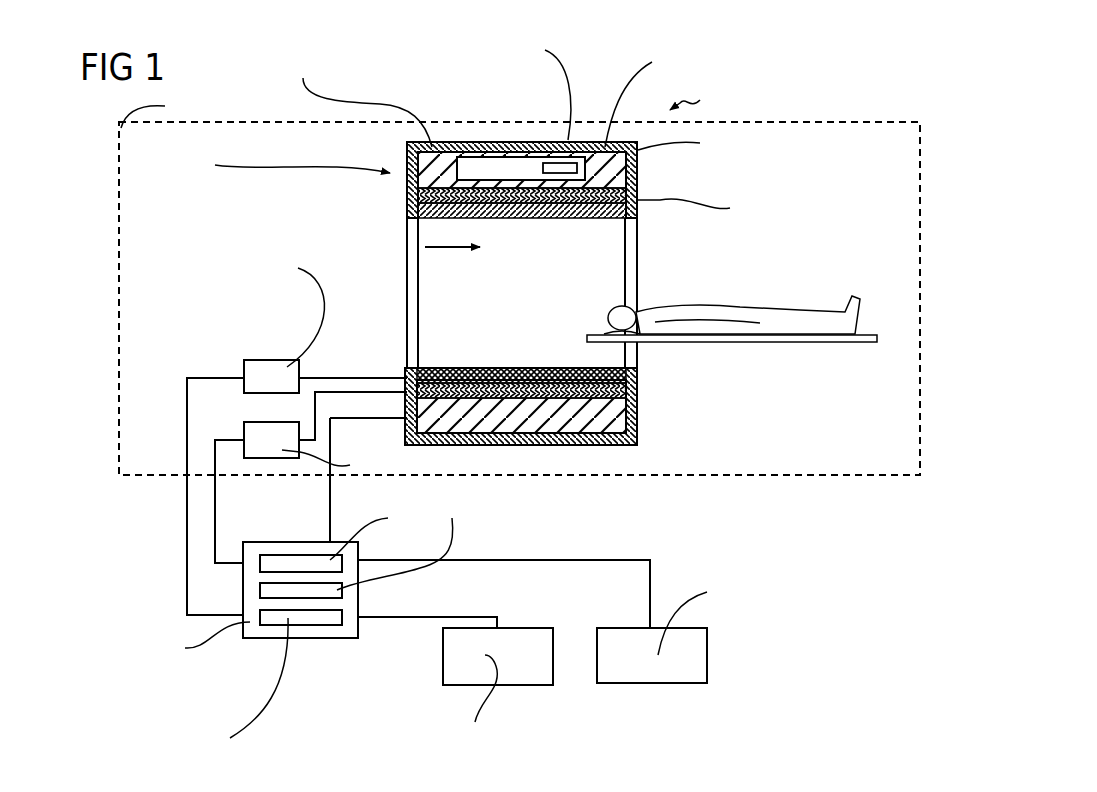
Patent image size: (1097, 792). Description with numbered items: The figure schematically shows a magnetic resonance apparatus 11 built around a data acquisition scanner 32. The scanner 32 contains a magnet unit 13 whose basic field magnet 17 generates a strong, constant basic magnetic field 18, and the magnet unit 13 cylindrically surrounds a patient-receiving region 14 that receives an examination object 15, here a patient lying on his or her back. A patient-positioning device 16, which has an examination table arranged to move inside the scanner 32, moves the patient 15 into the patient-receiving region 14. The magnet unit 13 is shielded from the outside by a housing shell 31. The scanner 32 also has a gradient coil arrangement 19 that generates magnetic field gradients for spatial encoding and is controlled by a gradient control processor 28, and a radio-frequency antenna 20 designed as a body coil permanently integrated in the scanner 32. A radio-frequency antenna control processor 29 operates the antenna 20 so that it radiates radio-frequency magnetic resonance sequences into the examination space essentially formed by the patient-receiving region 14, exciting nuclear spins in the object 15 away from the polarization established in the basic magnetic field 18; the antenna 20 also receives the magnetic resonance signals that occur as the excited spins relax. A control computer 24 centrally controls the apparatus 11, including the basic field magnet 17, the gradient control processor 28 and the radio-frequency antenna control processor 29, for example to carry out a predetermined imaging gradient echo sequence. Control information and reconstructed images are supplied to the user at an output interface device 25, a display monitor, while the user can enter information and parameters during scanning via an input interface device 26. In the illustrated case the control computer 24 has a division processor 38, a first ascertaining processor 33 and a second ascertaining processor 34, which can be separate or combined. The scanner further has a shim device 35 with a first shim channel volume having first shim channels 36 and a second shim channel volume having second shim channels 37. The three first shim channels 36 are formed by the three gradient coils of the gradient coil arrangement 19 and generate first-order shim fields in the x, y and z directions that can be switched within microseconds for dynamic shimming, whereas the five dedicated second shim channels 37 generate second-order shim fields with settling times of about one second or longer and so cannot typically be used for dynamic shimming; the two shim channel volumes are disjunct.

The magnetic resonance apparatus 11 is at (866, 481).
The magnet unit 13 is at (528, 227).
The patient-receiving region 14 is at (608, 247).
The examination object 15 is at (815, 318).
The patient-positioning device 16 is at (850, 345).
The basic field magnet 17 is at (638, 172).
The basic magnetic field 18 is at (453, 250).
The gradient coil arrangement 19 is at (418, 195).
The radio-frequency antenna 20 is at (407, 212).
The control computer 24 is at (360, 632).
The output interface device 25 is at (443, 655).
The input interface device 26 is at (708, 652).
The gradient control processor 28 is at (272, 460).
The radio-frequency antenna control processor 29 is at (278, 360).
The housing shell 31 is at (580, 140).
The scanner 32 is at (118, 278).
The first ascertaining processor 33 is at (330, 558).
The second ascertaining processor 34 is at (340, 588).
The shim device 35 is at (480, 140).
The first shim channel 36 is at (522, 203).
The second shim channel 37 is at (552, 140).
The division processor 38 is at (307, 628).